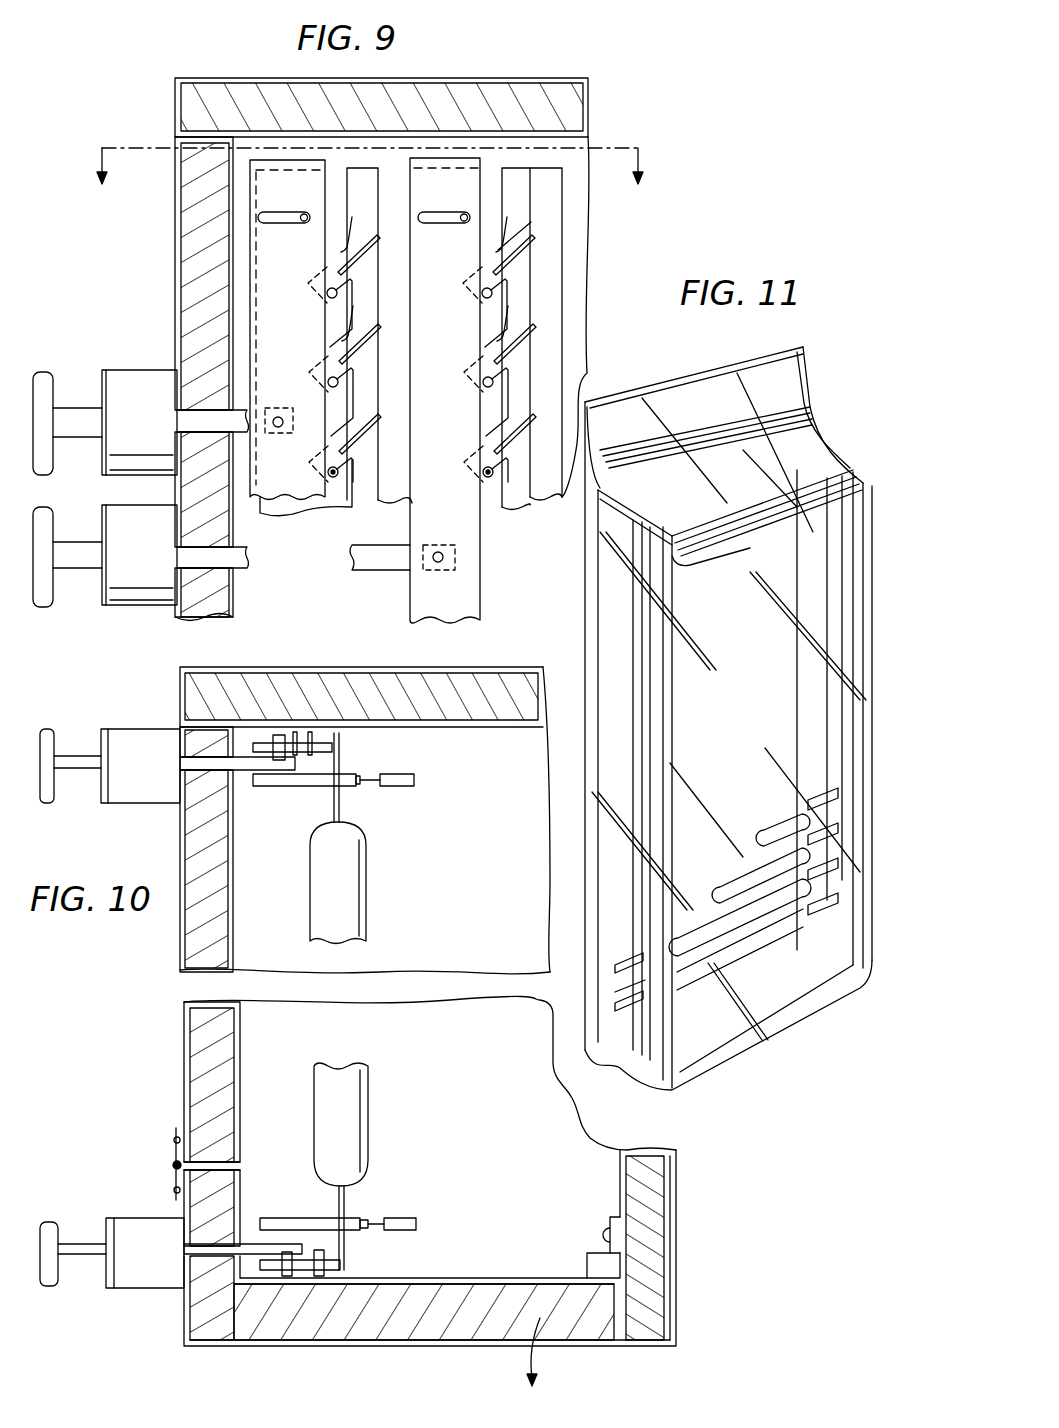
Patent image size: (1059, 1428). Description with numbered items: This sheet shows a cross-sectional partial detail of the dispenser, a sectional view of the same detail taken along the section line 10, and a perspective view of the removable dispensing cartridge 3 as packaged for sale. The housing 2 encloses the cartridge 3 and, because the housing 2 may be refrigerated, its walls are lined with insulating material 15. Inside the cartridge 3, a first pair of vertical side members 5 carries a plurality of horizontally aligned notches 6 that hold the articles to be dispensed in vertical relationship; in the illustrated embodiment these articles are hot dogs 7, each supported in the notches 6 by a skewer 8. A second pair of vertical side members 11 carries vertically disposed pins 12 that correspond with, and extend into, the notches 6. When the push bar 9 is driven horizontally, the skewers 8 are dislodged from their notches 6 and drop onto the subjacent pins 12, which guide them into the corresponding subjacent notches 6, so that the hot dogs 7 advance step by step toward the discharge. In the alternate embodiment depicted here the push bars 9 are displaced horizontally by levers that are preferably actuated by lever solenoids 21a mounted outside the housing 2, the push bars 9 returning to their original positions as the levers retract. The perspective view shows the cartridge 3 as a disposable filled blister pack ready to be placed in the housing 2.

In FIG. 9, the housing 2 is at (525, 78).
In FIG. 10, the housing 2 is at (505, 667).
In FIG. 11, the dispensing cartridge 3 is at (735, 952).
In FIG. 10, the first pair of vertical side members 5 is at (269, 790).
In FIG. 9, the notches 6 is at (446, 266).
In FIG. 10, the hot dogs 7 is at (342, 897).
In FIG. 9, the skewers 8 is at (338, 467).
In FIG. 10, the skewers 8 is at (341, 756).
In FIG. 9, the push bar 9 is at (455, 426).
In FIG. 10, the push bar 9 is at (296, 742).
In FIG. 9, the section line 10— 10 is at (371, 192).
In FIG. 9, the second pair of vertical side members 11 is at (404, 398).
In FIG. 10, the second pair of vertical side members 11 is at (415, 775).
In FIG. 9, the pins 12 is at (371, 257).
In FIG. 10, the pins 12 is at (373, 770).
In FIG. 9, the insulating material 15 is at (565, 107).
In FIG. 9, the lever solenoids 21a is at (136, 440).
In FIG. 10, the lever solenoids 21a is at (139, 781).